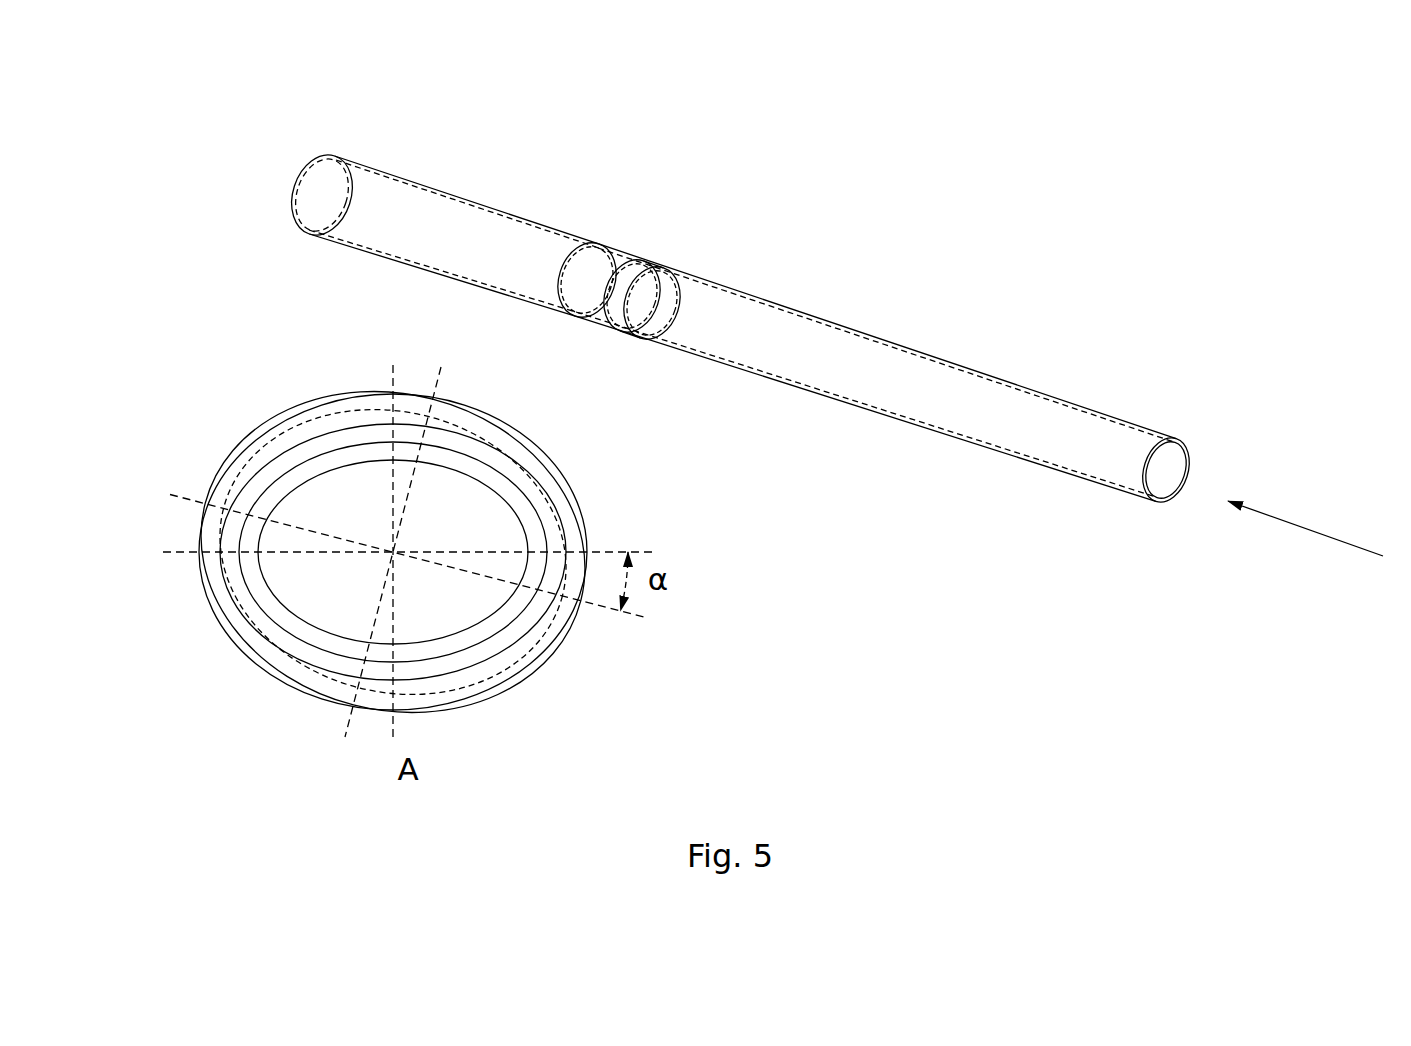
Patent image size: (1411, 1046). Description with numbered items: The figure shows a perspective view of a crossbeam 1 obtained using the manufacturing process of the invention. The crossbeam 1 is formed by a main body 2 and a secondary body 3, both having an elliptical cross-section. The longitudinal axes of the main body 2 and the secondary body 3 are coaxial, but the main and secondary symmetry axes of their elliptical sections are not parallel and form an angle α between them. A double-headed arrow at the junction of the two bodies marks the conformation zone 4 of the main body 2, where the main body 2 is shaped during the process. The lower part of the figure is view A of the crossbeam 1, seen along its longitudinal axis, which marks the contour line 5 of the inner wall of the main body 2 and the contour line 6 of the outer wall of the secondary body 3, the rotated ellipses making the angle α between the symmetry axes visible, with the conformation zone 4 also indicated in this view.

The crossbeam 1 is at (877, 180).
The main body of the crossbeam 2 is at (392, 217).
The secondary body of the crossbeam 3 is at (932, 415).
The conformation zone of the main body 4 is at (602, 207).
The contour line of the inner wall of the main body 5 is at (287, 650).
The contour line of the outer wall of the secondary body 6 is at (528, 608).